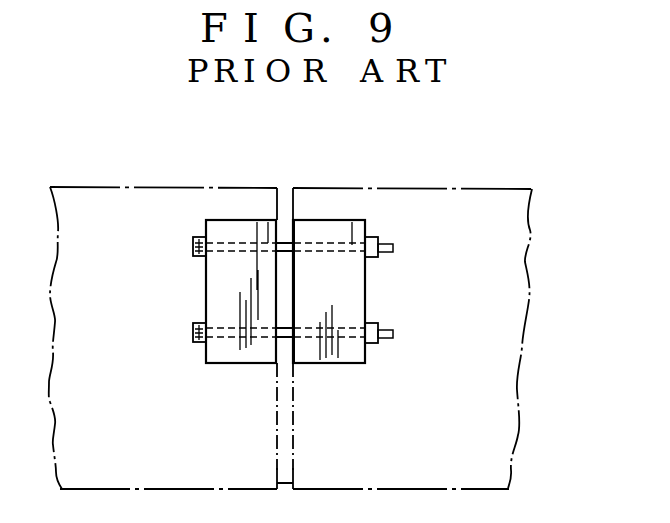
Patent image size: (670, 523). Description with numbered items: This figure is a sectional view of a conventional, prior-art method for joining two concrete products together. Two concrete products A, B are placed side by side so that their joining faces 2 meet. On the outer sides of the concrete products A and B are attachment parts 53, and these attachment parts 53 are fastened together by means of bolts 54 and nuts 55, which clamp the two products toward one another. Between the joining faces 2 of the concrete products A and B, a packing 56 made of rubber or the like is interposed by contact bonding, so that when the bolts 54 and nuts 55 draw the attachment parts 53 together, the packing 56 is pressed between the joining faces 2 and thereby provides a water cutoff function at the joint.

The concrete product A is at (122, 187).
The concrete product B is at (483, 189).
The joining faces 2 is at (274, 221).
The attachment parts 53 is at (208, 290).
The bolts 54 is at (193, 242).
The nuts 55 is at (376, 236).
The packing 56 is at (285, 415).